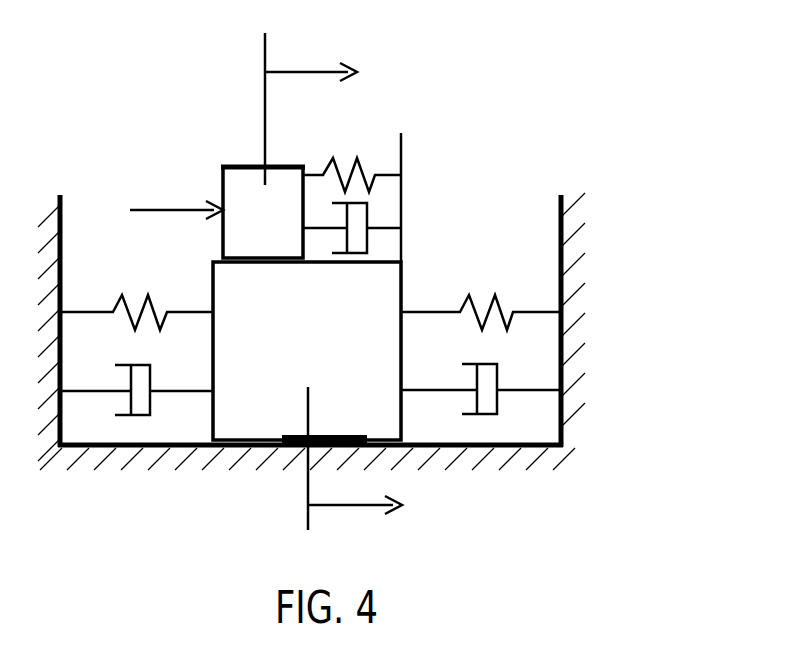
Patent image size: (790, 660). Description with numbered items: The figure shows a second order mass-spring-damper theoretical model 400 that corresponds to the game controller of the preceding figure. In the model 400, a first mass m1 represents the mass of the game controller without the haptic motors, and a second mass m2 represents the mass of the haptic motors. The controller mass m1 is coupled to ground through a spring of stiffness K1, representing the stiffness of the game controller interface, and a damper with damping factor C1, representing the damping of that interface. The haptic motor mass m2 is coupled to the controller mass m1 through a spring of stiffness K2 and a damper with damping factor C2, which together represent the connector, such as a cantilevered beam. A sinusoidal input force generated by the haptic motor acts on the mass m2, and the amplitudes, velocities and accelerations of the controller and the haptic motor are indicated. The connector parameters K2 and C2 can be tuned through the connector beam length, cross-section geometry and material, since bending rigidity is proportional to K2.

The second order mass-spring-damper theoretical model 400 is at (578, 93).
The mass of the game controller without the haptic motors m1 is at (307, 352).
The mass of the haptic motors m2 is at (263, 212).
The stiffness of the game controller interface K1 is at (310, 288).
The damping factor of the game controller interface C1 is at (310, 399).
The stiffness of the connector K2 is at (352, 154).
The damping factor of the connector C2 is at (376, 221).